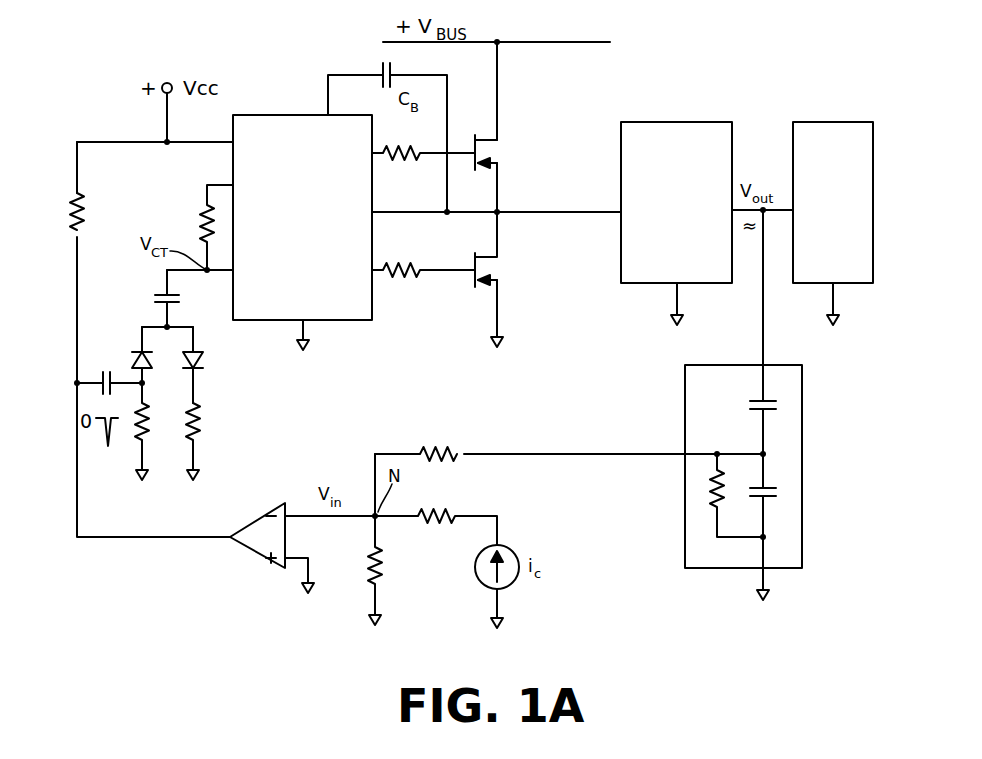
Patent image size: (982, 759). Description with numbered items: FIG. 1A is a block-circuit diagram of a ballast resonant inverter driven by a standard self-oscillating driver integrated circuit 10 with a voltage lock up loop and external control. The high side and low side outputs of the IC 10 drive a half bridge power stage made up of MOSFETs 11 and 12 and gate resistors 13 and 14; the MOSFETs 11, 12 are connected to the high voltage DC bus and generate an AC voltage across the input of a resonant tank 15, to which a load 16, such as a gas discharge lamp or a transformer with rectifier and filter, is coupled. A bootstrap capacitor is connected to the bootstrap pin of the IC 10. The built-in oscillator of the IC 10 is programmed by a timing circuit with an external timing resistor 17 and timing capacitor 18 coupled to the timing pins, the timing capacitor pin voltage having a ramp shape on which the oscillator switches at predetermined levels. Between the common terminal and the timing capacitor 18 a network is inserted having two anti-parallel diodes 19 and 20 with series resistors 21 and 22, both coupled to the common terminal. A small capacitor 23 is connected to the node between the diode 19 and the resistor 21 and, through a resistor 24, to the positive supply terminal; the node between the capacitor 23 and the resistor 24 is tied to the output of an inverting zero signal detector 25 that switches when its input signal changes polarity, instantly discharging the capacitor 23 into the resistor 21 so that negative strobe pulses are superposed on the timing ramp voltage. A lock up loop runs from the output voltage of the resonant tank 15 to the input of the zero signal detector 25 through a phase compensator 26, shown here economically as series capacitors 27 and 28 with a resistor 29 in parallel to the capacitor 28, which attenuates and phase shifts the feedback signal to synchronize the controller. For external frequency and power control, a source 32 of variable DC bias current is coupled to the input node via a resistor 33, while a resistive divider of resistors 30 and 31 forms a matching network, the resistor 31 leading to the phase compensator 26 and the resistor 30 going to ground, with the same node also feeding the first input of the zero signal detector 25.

The self-oscillating driver integrated circuit 10 is at (302, 232).
The MOSFET 11 is at (484, 160).
The MOSFET 12 is at (484, 277).
The gate resistor 13 is at (408, 162).
The gate resistor 14 is at (408, 279).
The resonant tank 15 is at (673, 120).
The load 16 is at (829, 120).
The timing resistor 17 is at (203, 235).
The timing capacitor 18 is at (153, 298).
The diode 19 is at (136, 362).
The diode 20 is at (203, 362).
The resistor 21 is at (136, 450).
The resistor 22 is at (208, 427).
The capacitor 23 is at (100, 378).
The resistor 24 is at (90, 218).
The zero signal detector 25 is at (250, 553).
The phase compensator 26 is at (685, 392).
The capacitor 27 is at (748, 405).
The capacitor 28 is at (778, 492).
The resistor 29 is at (715, 518).
The resistor 30 is at (385, 570).
The resistor 31 is at (441, 444).
The source of variable DC bias current 32 is at (478, 584).
The resistor 33 is at (438, 508).